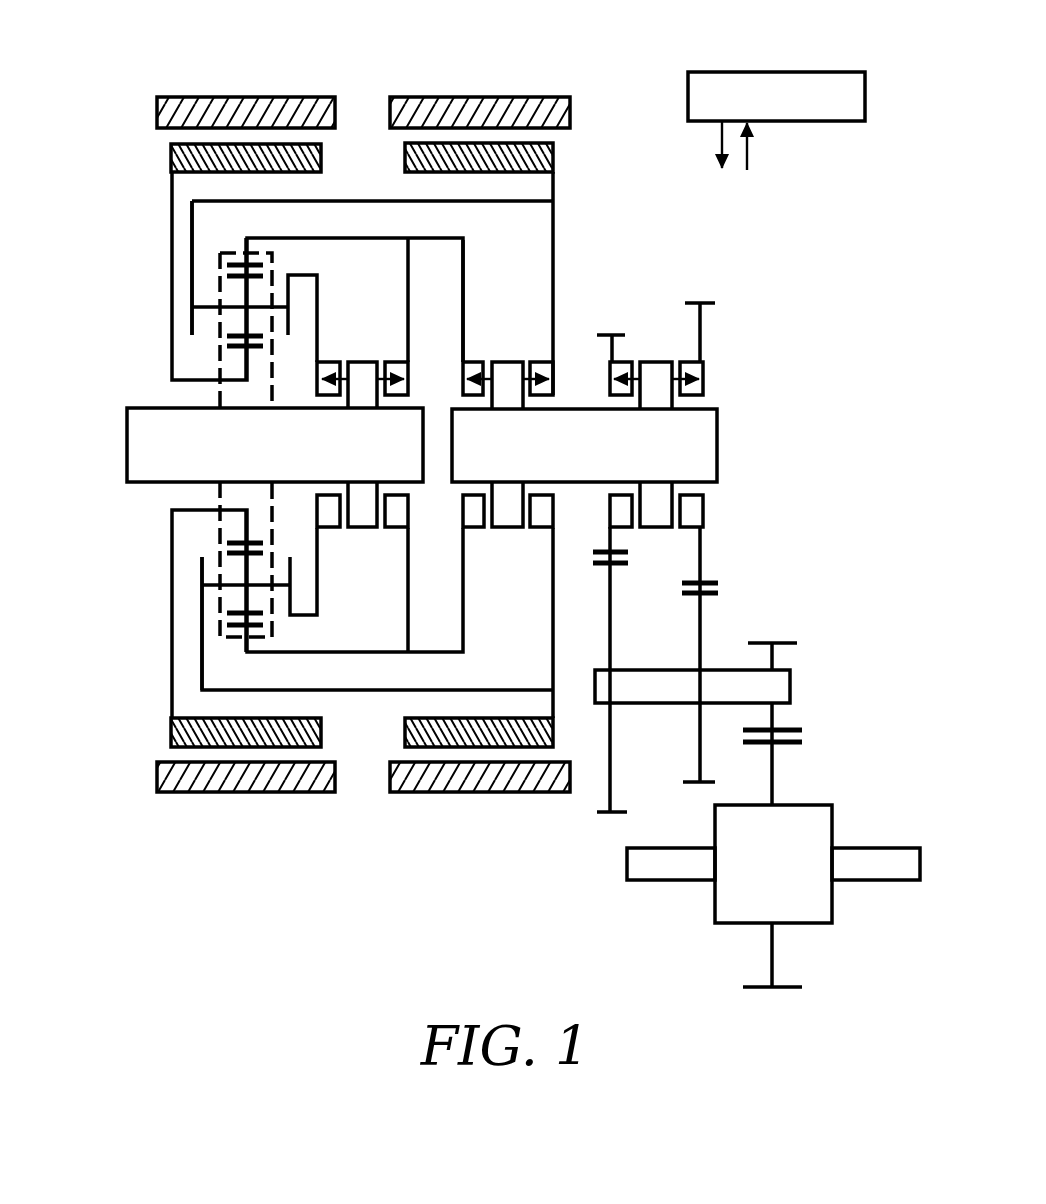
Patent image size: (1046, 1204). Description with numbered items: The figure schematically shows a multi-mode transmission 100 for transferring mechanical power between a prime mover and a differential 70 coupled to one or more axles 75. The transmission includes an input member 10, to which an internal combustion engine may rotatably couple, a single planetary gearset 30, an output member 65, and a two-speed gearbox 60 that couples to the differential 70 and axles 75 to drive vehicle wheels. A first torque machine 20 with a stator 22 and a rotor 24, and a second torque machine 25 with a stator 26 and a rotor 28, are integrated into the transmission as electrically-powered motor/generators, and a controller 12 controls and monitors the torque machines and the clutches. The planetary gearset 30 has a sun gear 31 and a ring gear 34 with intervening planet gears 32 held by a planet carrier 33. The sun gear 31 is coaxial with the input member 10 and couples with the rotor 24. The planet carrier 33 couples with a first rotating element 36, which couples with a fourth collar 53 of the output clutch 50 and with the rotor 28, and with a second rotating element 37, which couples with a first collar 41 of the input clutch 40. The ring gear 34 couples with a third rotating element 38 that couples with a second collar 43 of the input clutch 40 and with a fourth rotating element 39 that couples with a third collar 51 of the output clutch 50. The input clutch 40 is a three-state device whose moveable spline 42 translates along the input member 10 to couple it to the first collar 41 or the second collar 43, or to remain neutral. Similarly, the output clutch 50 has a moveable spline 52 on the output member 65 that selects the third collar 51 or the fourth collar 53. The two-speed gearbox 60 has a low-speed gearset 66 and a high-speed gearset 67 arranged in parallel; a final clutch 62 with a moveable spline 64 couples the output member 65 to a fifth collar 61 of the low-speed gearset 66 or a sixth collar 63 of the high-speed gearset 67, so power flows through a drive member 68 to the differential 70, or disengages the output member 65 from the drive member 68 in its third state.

The input member 10 is at (138, 445).
The controller 12 is at (776, 121).
The first torque machine 20 is at (205, 410).
The stator 22 is at (157, 107).
The rotor 24 is at (171, 158).
The second torque machine 25 is at (518, 410).
The stator 26 is at (570, 107).
The rotor 28 is at (553, 158).
The single planetary gearset 30 is at (214, 257).
The sun gear 31 is at (222, 340).
The planet gears 32 is at (245, 298).
The planet carrier 33 is at (192, 322).
The ring gear 34 is at (237, 270).
The first rotating element 36 is at (553, 225).
The second rotating element 37 is at (320, 282).
The third rotating element 38 is at (410, 262).
The fourth rotating element 39 is at (465, 276).
The input clutch 40 is at (362, 389).
The first collar 41 is at (327, 398).
The moveable spline 42 is at (360, 375).
The second collar 43 is at (397, 370).
The output clutch 50 is at (548, 401).
The third collar 51 is at (470, 395).
The moveable spline 52 is at (512, 395).
The fourth collar 53 is at (553, 385).
The two-speed gearbox 60 is at (685, 379).
The fifth collar 61 is at (608, 377).
The final clutch 62 is at (655, 375).
The sixth collar 63 is at (706, 378).
The moveable spline 64 is at (657, 410).
The output member 65 is at (717, 440).
The low-speed gearset 66 is at (625, 558).
The high-speed gearset 67 is at (716, 585).
The drive member 68 is at (790, 688).
The differential 70 is at (773, 896).
The axles 75 is at (668, 868).
The multi-mode transmission 100 is at (849, 164).